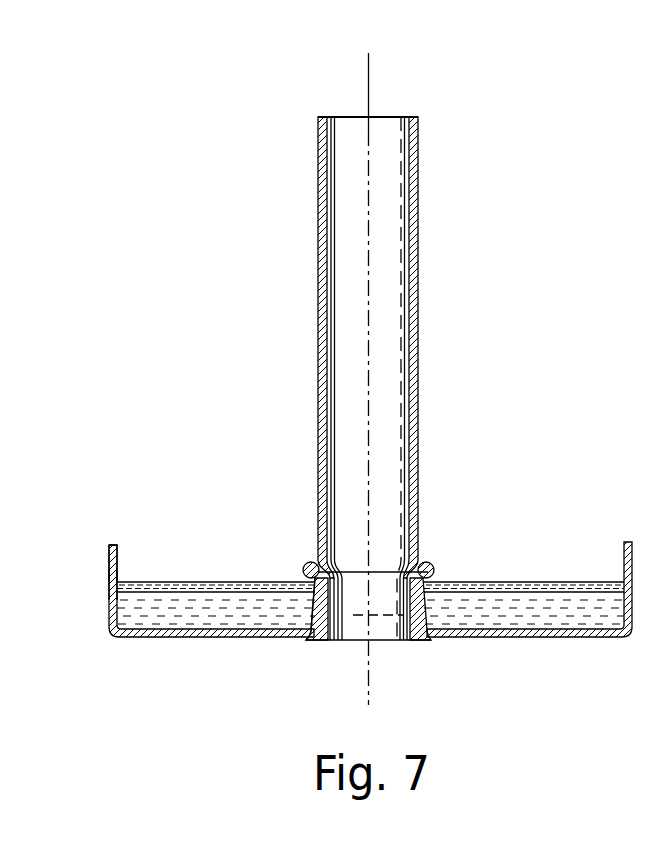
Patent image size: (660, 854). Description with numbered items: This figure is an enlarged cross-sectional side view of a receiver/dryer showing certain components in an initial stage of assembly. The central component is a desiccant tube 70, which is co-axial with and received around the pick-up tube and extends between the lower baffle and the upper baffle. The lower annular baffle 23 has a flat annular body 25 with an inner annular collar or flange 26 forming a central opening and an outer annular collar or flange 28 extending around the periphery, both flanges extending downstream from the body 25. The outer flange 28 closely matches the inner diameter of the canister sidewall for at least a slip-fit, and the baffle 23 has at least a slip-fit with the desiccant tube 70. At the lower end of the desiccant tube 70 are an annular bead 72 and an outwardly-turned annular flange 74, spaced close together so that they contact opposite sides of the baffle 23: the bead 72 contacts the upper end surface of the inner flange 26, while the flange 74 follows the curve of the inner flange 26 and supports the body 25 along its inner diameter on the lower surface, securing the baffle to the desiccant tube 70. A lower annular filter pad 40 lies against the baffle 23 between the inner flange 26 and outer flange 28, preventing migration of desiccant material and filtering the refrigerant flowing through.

The desiccant tube 70 is at (419, 350).
The annular bead 72 is at (426, 562).
The outwardly-turned annular flange 74 is at (426, 641).
The lower annular baffle 23 is at (109, 545).
The outer annular collar or flange 28 is at (111, 578).
The flat annular body 25 is at (192, 637).
The inner annular collar or flange 26 is at (313, 600).
The lower annular filter pad 40 is at (580, 617).